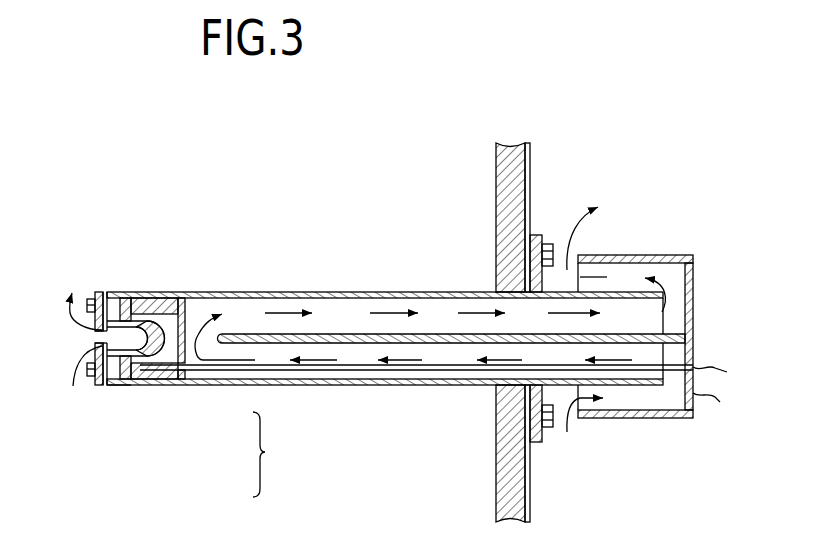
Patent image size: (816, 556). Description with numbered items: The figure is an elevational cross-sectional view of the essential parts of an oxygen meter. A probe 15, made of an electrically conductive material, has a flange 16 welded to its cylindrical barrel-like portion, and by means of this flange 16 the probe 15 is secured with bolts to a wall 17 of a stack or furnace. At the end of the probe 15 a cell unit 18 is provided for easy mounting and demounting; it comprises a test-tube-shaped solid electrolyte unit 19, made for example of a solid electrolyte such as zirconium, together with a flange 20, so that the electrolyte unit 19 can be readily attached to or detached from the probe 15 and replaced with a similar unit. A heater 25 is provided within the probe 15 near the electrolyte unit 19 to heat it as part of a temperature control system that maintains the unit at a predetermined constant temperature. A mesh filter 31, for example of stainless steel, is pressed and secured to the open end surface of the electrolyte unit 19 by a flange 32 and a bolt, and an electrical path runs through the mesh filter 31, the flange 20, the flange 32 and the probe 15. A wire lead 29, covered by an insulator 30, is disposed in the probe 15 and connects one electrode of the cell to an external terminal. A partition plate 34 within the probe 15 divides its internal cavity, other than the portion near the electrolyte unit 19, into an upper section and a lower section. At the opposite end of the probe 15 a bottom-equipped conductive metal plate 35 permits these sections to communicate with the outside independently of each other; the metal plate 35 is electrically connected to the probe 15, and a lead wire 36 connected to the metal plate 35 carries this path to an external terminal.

The probe 15 is at (365, 292).
The flange 16 is at (532, 232).
The wall 17 is at (495, 180).
The cell unit 18 is at (277, 454).
The solid electrolyte unit 19 is at (168, 356).
The flange 20 is at (117, 388).
The heater 25 is at (165, 292).
The wire lead 29 is at (723, 373).
The insulator 30 is at (385, 383).
The mesh filter 31 is at (103, 338).
The flange 32 is at (97, 293).
The partition plate 34 is at (447, 343).
The metal plate 35 is at (667, 257).
The lead wire 36 is at (713, 400).